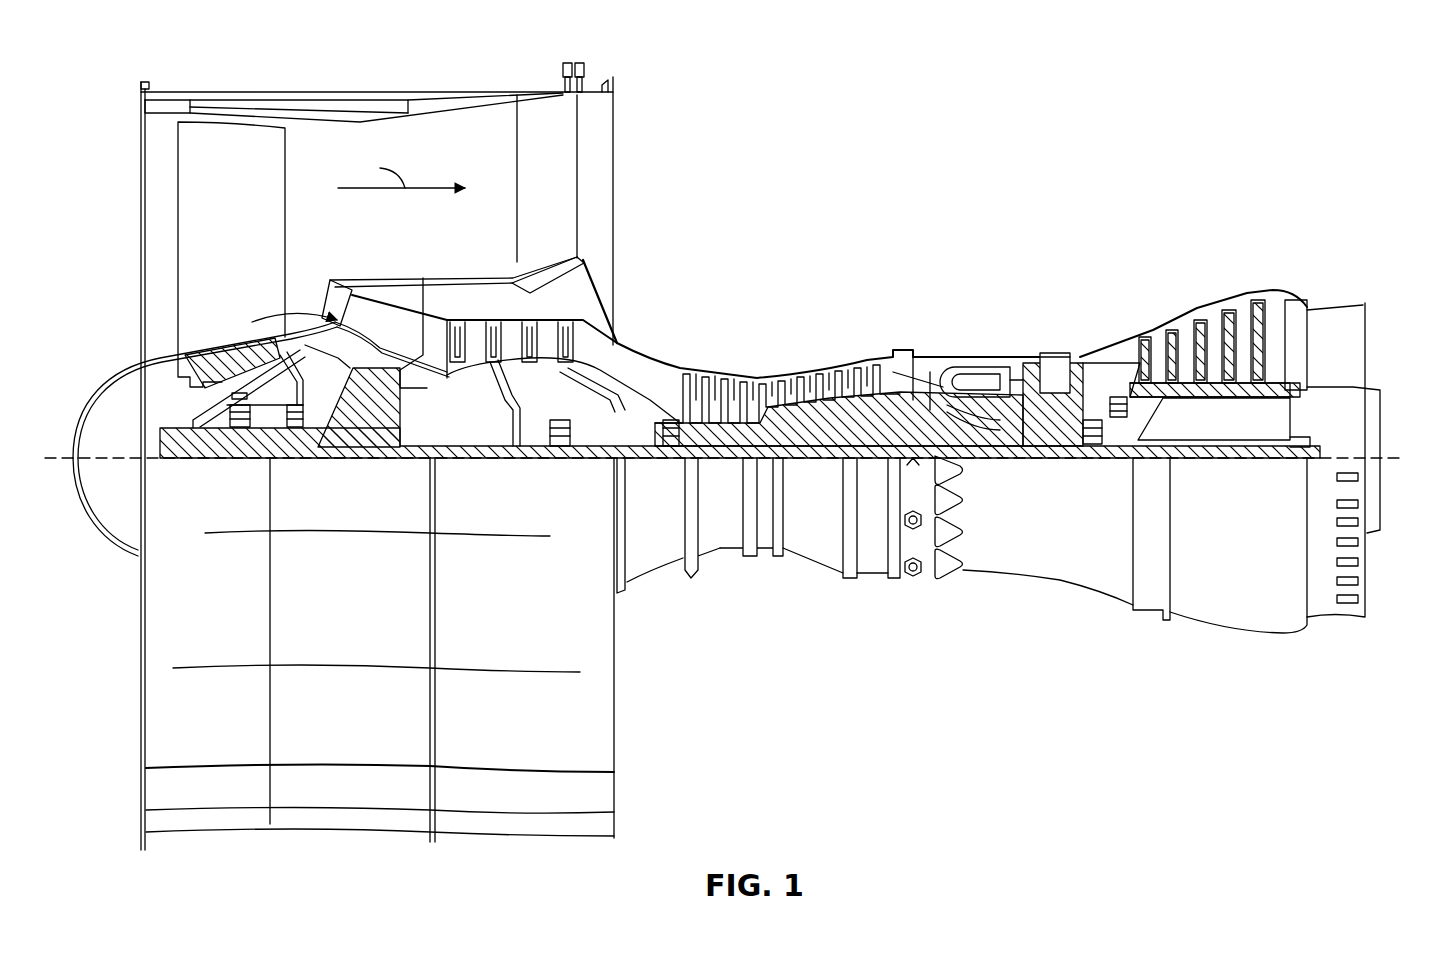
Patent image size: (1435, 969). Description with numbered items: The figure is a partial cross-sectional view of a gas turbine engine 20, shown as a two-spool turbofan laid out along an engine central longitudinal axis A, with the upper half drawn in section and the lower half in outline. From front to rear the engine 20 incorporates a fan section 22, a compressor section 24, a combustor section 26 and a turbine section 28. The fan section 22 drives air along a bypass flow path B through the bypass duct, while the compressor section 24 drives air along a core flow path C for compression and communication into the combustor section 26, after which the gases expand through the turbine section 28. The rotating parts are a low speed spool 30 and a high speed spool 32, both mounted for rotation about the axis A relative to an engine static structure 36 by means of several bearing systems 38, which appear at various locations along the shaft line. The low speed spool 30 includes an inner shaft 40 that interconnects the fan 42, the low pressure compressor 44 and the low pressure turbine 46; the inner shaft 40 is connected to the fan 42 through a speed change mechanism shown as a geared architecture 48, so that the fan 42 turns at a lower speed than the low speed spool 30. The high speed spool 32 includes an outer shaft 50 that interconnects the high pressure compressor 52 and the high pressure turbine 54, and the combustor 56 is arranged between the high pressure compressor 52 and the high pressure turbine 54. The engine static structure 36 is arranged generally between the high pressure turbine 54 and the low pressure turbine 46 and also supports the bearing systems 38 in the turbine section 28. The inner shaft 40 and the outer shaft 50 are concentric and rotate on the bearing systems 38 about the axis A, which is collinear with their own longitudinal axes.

The gas turbine engine 20 is at (1188, 126).
The fan section 22 is at (232, 82).
The compressor section 24 is at (805, 318).
The combustor section 26 is at (969, 318).
The turbine section 28 is at (1116, 300).
The low speed spool 30 is at (837, 463).
The high speed spool 32 is at (887, 407).
The engine static structure 36 is at (875, 575).
The bearing systems 38 is at (243, 418).
The inner shaft 40 is at (627, 453).
The fan 42 is at (258, 213).
The low pressure compressor 44 is at (527, 337).
The low pressure turbine 46 is at (1222, 318).
The geared architecture 48 is at (380, 428).
The outer shaft 50 is at (1002, 440).
The high pressure compressor 52 is at (795, 428).
The high pressure turbine 54 is at (1055, 350).
The combustor 56 is at (975, 375).
The engine central longitudinal axis A is at (1390, 457).
The bypass flow path B is at (401, 172).
The core flow path C is at (252, 312).